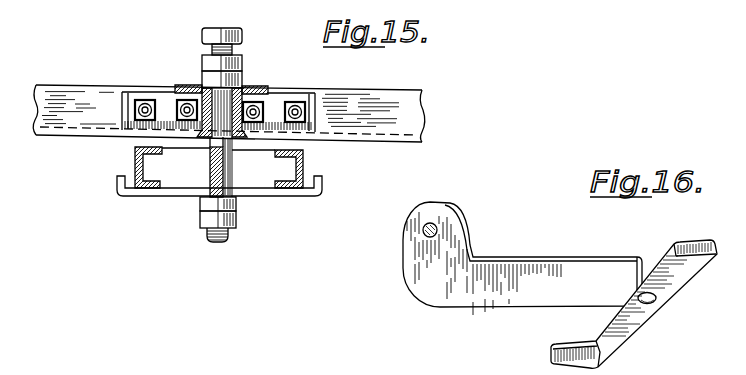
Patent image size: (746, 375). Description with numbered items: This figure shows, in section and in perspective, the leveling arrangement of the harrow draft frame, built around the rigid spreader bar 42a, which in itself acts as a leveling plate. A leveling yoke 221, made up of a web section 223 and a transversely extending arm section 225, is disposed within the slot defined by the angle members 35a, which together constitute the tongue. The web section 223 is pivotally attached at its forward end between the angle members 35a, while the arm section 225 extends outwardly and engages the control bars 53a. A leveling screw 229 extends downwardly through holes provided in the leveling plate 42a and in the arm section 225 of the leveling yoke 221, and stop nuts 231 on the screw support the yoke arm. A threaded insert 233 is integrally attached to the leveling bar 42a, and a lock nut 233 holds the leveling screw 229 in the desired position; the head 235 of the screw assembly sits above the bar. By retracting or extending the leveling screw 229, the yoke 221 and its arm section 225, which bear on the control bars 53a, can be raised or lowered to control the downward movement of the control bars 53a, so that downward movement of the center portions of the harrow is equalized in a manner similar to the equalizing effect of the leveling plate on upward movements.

In FIG. 15, the spreader bar 42a is at (414, 111).
In FIG. 15, the angle members 35a is at (188, 88).
In FIG. 15, the bolt head and upper nut 235 is at (203, 63).
In FIG. 15, the threaded insert 233 is at (240, 86).
In FIG. 15, the leveling screw 229 is at (208, 169).
In FIG. 15, the web section 223 is at (224, 176).
In FIG. 16, the web section 223 is at (427, 285).
In FIG. 15, the stop nuts 231 is at (236, 219).
In FIG. 15, the leveling yoke 221 is at (226, 140).
In FIG. 16, the leveling yoke 221 is at (536, 285).
In FIG. 15, the control bars 53a is at (137, 165).
In FIG. 15, the arm section 225 is at (160, 197).
In FIG. 16, the arm section 225 is at (630, 333).